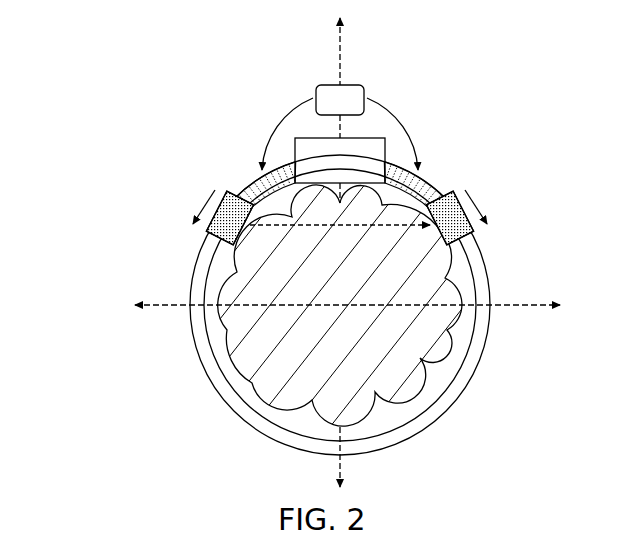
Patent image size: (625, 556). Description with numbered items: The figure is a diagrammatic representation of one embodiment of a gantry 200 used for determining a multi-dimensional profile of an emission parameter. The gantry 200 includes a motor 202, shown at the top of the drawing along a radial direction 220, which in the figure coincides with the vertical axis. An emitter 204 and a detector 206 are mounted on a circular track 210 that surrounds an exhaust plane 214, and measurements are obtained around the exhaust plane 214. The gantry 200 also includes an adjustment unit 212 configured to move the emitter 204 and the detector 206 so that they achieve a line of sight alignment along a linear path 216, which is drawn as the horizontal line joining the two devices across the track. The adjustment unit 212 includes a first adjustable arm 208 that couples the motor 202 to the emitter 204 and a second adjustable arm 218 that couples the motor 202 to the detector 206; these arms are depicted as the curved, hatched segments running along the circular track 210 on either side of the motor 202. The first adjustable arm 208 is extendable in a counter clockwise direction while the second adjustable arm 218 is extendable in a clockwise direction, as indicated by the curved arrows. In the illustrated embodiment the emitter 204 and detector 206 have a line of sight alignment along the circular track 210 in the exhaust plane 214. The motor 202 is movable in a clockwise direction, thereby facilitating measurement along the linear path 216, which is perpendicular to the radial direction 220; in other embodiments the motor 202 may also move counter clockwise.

The gantry 200 is at (98, 95).
The motor 202 is at (286, 136).
The emitter 204 is at (208, 236).
The detector 206 is at (478, 230).
The first adjustable arm 208 is at (252, 188).
The circular track 210 is at (492, 268).
The adjustment unit 212 is at (330, 85).
The exhaust plane 214 is at (362, 360).
The linear path 216 is at (330, 238).
The second adjustable arm 218 is at (418, 182).
The radial direction 220 is at (345, 44).